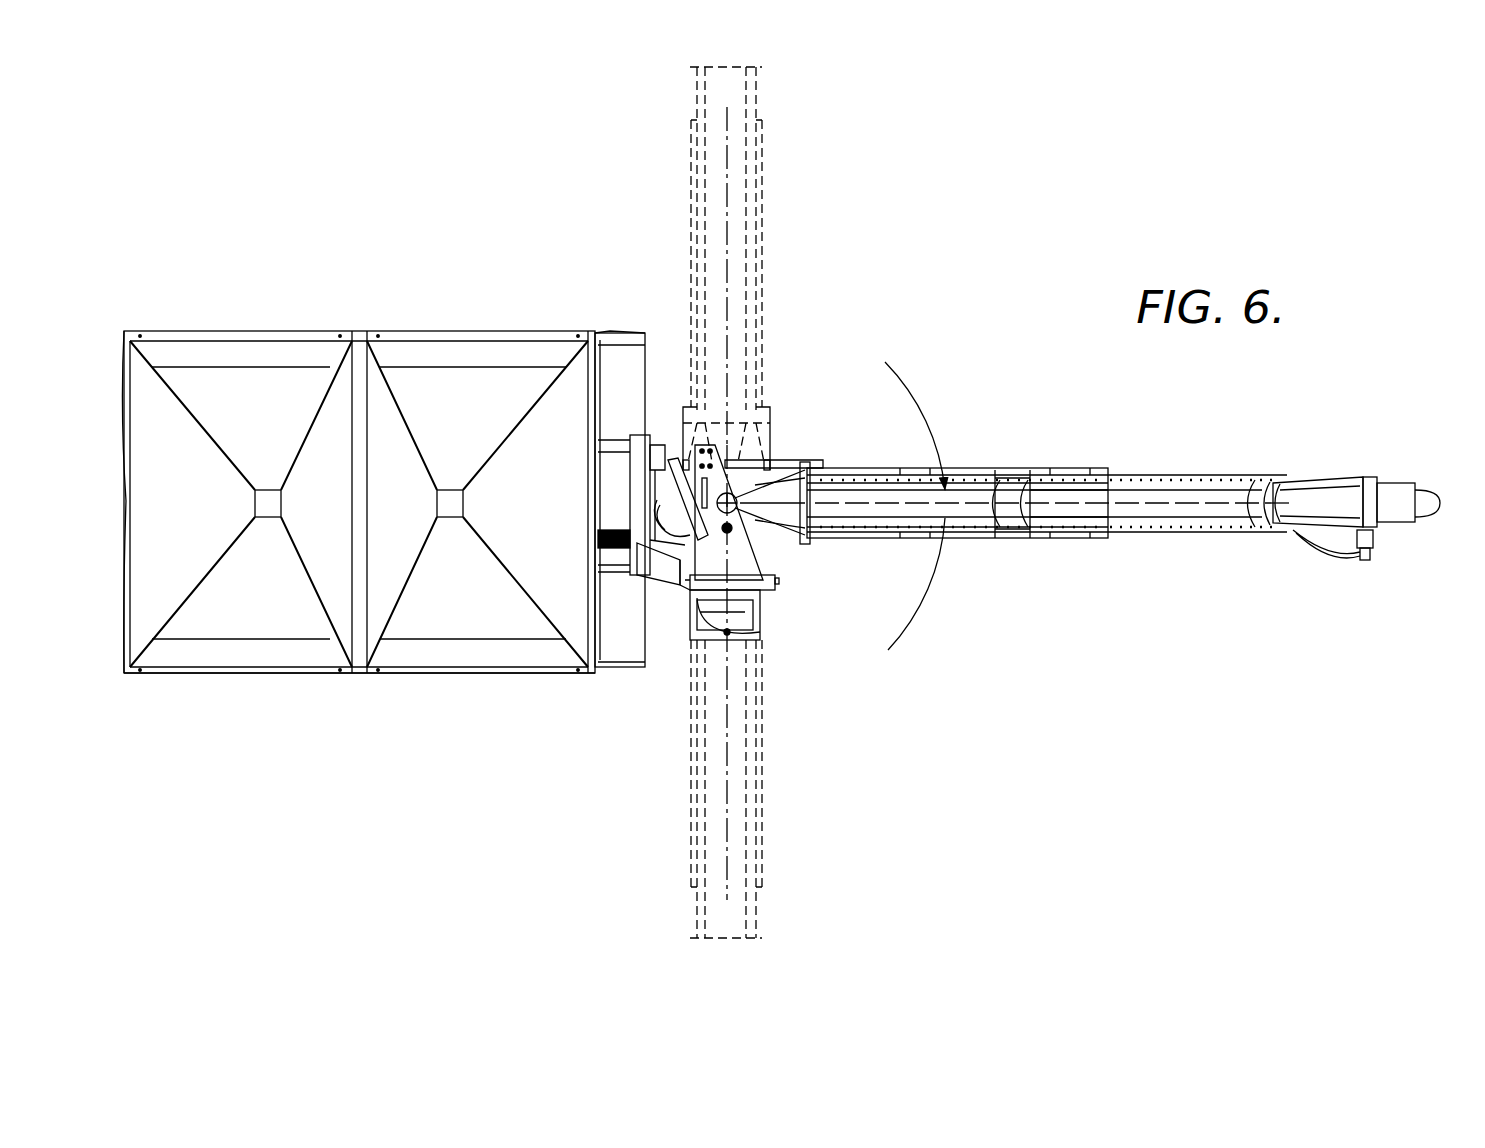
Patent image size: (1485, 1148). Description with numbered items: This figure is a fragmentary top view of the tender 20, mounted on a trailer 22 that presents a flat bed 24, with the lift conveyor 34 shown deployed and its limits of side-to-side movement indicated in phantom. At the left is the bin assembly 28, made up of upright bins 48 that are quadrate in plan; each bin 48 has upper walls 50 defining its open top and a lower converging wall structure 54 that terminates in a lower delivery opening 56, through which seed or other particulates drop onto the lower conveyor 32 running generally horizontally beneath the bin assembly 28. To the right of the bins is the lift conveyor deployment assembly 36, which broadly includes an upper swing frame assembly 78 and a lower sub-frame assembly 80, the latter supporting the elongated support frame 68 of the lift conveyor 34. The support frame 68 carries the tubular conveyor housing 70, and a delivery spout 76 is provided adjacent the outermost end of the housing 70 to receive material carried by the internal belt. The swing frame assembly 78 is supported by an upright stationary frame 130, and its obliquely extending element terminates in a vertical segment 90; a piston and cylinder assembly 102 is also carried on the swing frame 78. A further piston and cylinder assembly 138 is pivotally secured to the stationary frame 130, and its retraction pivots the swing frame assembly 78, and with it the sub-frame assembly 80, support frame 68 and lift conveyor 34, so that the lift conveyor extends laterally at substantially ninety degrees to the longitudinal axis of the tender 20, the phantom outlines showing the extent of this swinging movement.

The tender 20 is at (440, 230).
The trailer 22 is at (622, 325).
The flat bed 24 is at (620, 655).
The bin assembly 28 is at (400, 685).
The lower conveyor 32 is at (625, 525).
The lift conveyor 34 is at (775, 186).
The lift conveyor deployment assembly 36 is at (790, 437).
The upright bin 48 is at (238, 325).
The upper walls 50 is at (183, 337).
The lower converging wall structure 54 is at (359, 504).
The lower delivery opening 56 is at (272, 495).
The support frame 68 is at (1003, 467).
The tubular conveyor housing 70 is at (1165, 505).
The delivery spout 76 is at (1433, 507).
The upper swing frame assembly 78 is at (792, 592).
The lower sub-frame assembly 80 is at (815, 440).
The vertical segment 90 is at (740, 290).
The piston and cylinder assembly 102 is at (733, 610).
The upright stationary frame 130 is at (626, 490).
The piston and cylinder assembly 138 is at (655, 498).